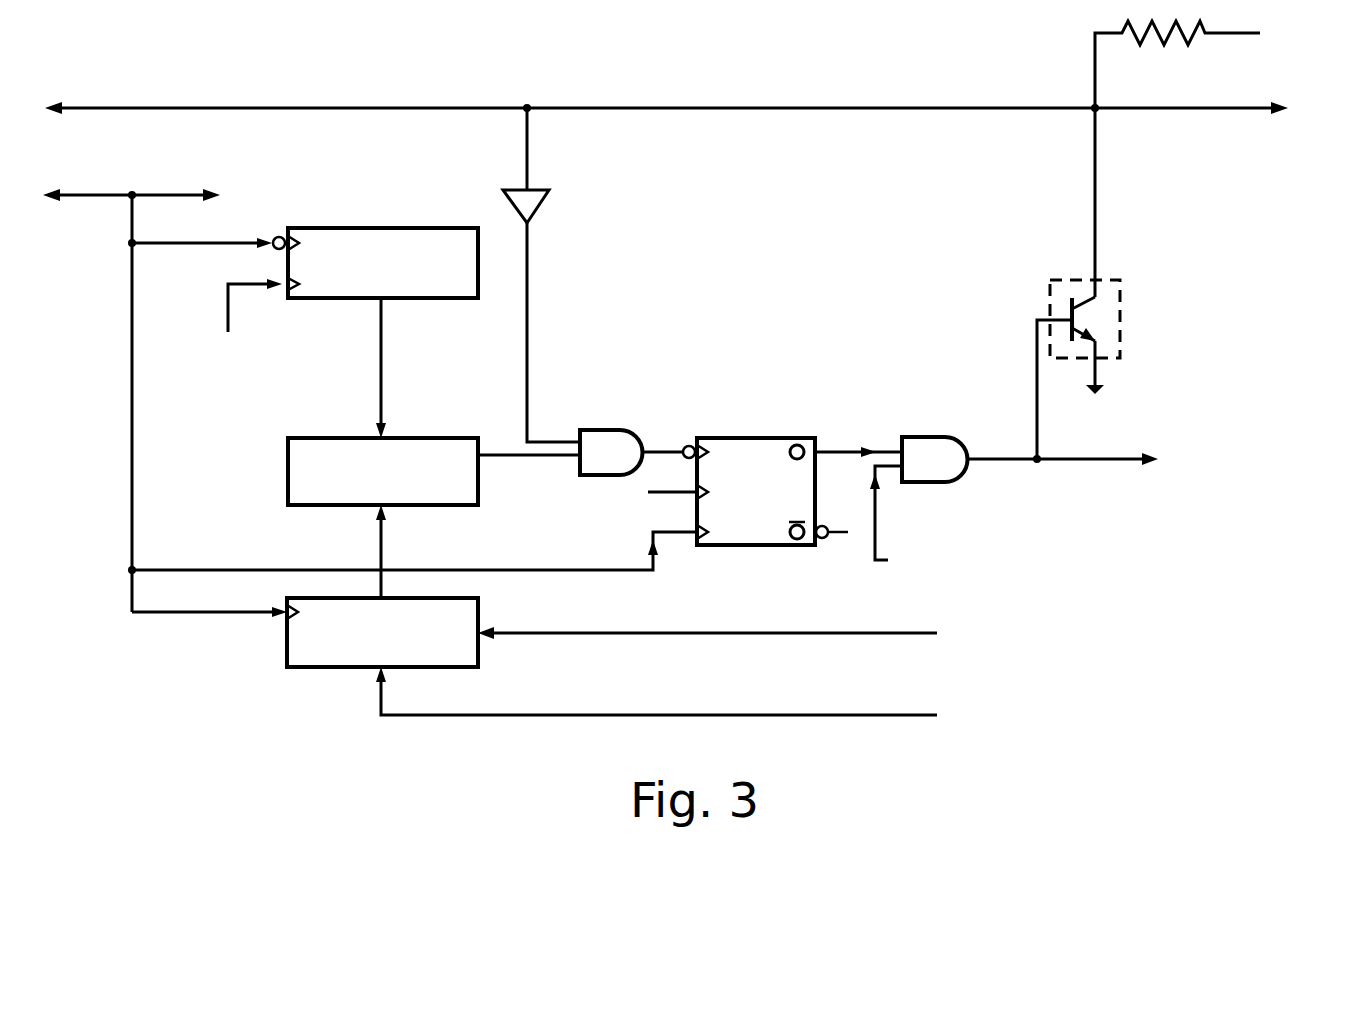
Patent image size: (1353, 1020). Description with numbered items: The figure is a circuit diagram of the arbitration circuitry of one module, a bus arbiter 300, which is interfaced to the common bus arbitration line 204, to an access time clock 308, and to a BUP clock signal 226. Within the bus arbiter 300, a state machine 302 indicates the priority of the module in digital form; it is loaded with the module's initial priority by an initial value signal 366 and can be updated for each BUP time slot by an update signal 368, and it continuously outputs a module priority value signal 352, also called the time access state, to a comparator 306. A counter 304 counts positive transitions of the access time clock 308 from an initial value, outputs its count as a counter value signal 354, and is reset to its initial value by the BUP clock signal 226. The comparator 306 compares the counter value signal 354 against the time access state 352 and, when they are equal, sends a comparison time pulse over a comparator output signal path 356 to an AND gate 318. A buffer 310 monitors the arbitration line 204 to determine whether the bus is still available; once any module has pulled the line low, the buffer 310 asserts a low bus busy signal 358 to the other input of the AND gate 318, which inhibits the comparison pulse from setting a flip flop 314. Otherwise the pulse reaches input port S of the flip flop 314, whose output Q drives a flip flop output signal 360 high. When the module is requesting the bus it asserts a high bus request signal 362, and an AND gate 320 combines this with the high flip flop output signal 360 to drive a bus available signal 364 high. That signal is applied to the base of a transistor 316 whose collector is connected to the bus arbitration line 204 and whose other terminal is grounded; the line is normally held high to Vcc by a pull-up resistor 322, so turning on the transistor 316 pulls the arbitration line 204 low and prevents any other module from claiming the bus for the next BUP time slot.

The common bus arbitration line 204 is at (666, 83).
The BUP clock signal 226 is at (130, 389).
The bus arbiter 300 is at (256, 798).
The state machine 302 is at (305, 663).
The counter 304 is at (305, 235).
The comparator 306 is at (365, 501).
The access time clock 308 is at (222, 332).
The buffer 310 is at (552, 224).
The flip flop 314 is at (748, 463).
The transistor 316 is at (1128, 251).
The AND gate 318 is at (637, 425).
The AND gate 320 is at (1110, 432).
The pull-up resistor 322 is at (1203, 64).
The module priority value signal 352 is at (414, 551).
The counter value signal 354 is at (412, 368).
The comparator output signal path 356 is at (529, 485).
The bus busy signal 358 is at (571, 275).
The flip flop output signal 360 is at (858, 425).
The bus request signal 362 is at (951, 519).
The bus available signal 364 is at (1081, 389).
The initial value signal 366 is at (724, 693).
The update signal 368 is at (750, 612).